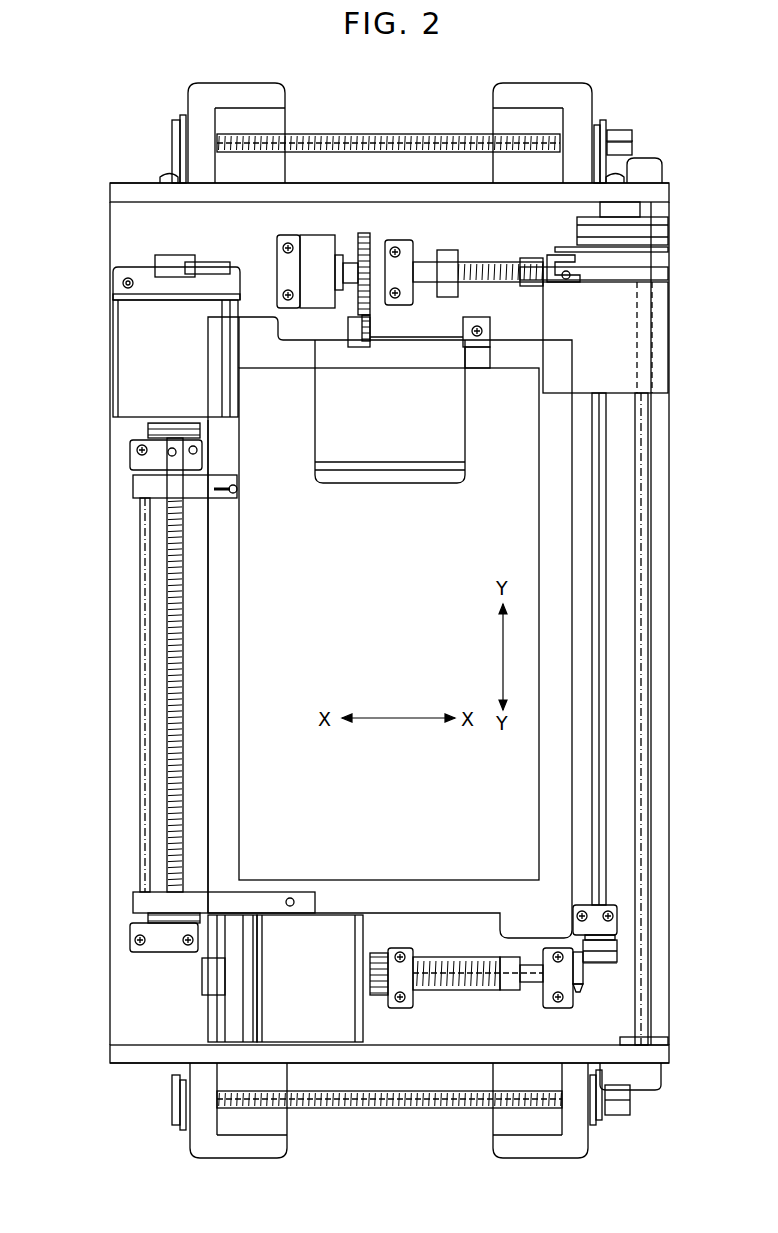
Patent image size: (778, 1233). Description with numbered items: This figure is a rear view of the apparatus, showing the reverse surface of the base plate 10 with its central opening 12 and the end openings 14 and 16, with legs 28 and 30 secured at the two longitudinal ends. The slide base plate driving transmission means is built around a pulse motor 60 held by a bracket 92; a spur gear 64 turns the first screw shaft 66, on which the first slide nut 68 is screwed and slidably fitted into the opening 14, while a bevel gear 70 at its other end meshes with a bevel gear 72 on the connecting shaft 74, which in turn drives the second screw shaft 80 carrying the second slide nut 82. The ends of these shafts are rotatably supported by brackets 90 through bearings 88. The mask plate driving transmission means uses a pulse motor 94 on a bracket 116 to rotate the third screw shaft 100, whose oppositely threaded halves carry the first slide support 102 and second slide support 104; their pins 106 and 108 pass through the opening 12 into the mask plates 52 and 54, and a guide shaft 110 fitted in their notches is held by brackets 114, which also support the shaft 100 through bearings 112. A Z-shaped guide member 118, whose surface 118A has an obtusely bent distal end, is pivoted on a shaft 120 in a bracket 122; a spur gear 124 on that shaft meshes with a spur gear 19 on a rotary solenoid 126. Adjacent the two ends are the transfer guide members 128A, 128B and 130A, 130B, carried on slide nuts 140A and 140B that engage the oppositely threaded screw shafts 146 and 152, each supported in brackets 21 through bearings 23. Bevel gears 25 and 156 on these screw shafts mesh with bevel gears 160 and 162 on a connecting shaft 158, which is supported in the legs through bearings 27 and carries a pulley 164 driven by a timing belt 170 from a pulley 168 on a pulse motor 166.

The base plate 10 is at (662, 636).
The opening 12 is at (386, 614).
The opening 14 is at (462, 994).
The opening 16 is at (482, 268).
The spur gear 19 is at (364, 236).
The brackets 21 is at (176, 150).
The bearings 23 is at (183, 120).
The bevel gear 25 is at (632, 1102).
The bearings 27 is at (655, 230).
The leg 28 is at (126, 1058).
The leg 30 is at (122, 192).
The mask plate 52 is at (548, 782).
The mask plate 54 is at (234, 804).
The pulse motor 60 is at (350, 1018).
The spur gear 64 is at (378, 956).
The first screw shaft 66 is at (474, 966).
The first slide nut 68 is at (512, 996).
The bevel gear 70 is at (586, 982).
The bevel gear 72 is at (620, 960).
The connecting shaft 74 is at (606, 706).
The second screw shaft 80 is at (516, 274).
The second slide nut 82 is at (446, 262).
The bearings 88 is at (410, 252).
The brackets 90 is at (402, 250).
The bracket 92 is at (212, 1036).
The pulse motor 94 is at (132, 366).
The third screw shaft 100 is at (165, 690).
The first slide support 102 is at (138, 902).
The second slide support 104 is at (140, 488).
The pin 106 is at (296, 902).
The pin 108 is at (238, 490).
The guide shaft 110 is at (142, 614).
The bearings 112 is at (145, 432).
The brackets 114 is at (135, 460).
The bracket 116 is at (120, 288).
The guide member 118 is at (470, 446).
The surface 118A is at (450, 474).
The shaft 120 is at (476, 362).
The bracket 122 is at (484, 324).
The spur gear 124 is at (362, 323).
The rotary solenoid 126 is at (314, 245).
The transfer guide member 128A is at (542, 1160).
The transfer guide member 128B is at (256, 1160).
The transfer guide member 130A is at (252, 82).
The transfer guide member 130B is at (548, 82).
The slide nut 140A is at (202, 116).
The slide nut 140B is at (576, 116).
The screw shaft 146 is at (392, 1110).
The screw shaft 152 is at (378, 140).
The bevel gear 156 is at (632, 146).
The connecting shaft 158 is at (645, 563).
The bevel gear 160 is at (632, 1086).
The bevel gear 162 is at (654, 158).
The pulley 164 is at (645, 278).
The pulse motor 166 is at (670, 342).
The pulley 168 is at (600, 214).
The timing belt 170 is at (645, 250).